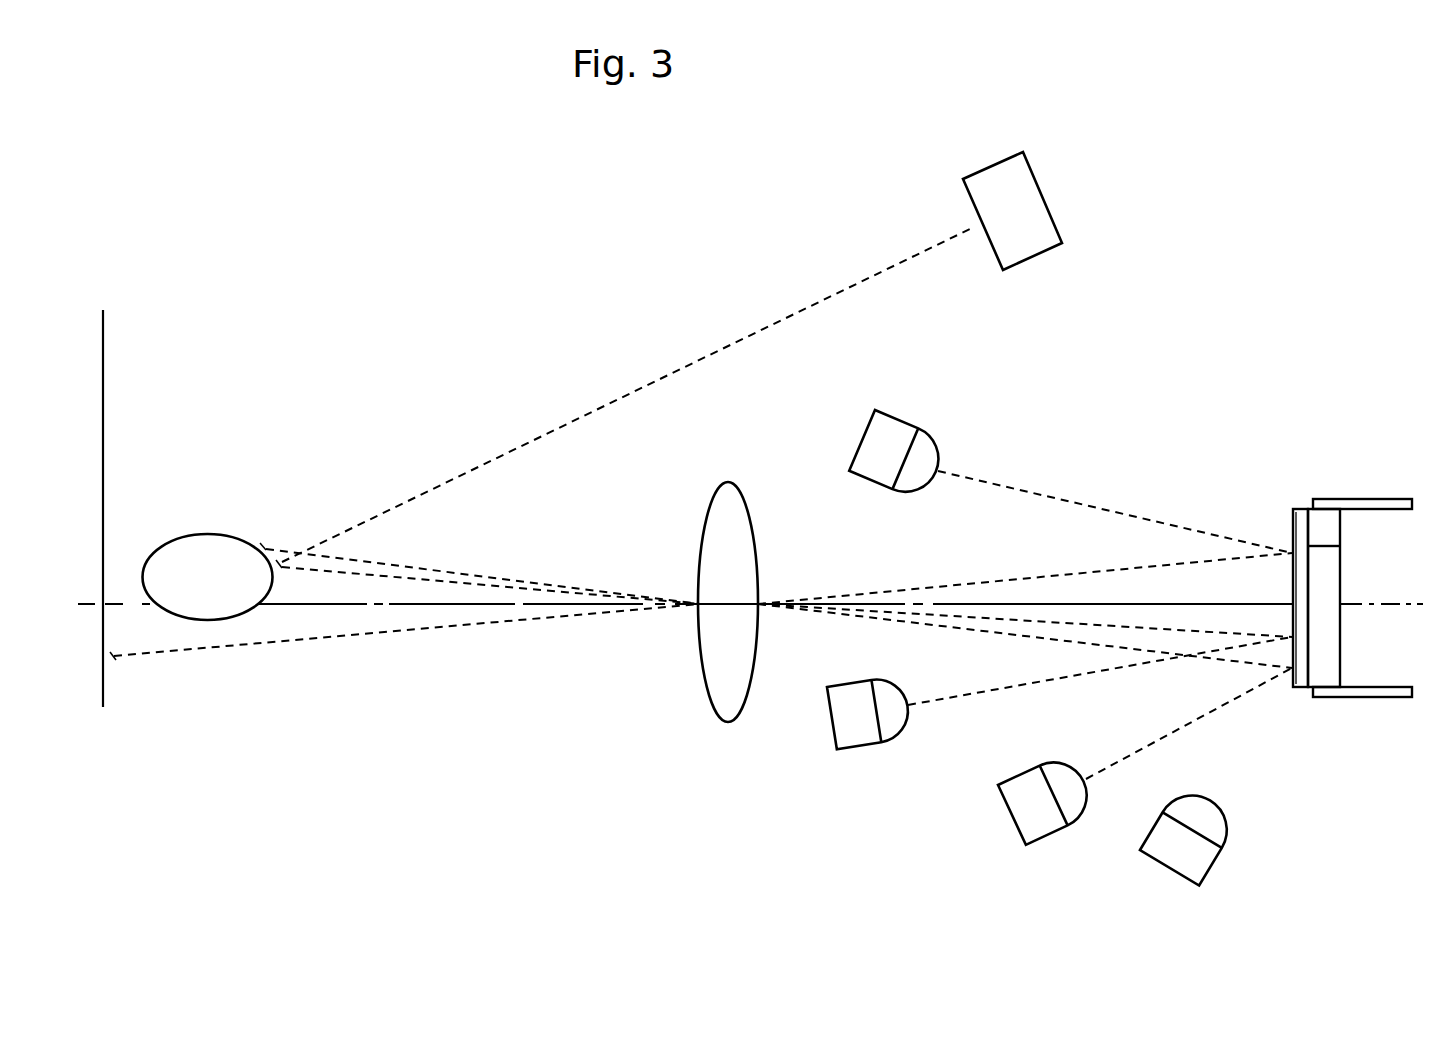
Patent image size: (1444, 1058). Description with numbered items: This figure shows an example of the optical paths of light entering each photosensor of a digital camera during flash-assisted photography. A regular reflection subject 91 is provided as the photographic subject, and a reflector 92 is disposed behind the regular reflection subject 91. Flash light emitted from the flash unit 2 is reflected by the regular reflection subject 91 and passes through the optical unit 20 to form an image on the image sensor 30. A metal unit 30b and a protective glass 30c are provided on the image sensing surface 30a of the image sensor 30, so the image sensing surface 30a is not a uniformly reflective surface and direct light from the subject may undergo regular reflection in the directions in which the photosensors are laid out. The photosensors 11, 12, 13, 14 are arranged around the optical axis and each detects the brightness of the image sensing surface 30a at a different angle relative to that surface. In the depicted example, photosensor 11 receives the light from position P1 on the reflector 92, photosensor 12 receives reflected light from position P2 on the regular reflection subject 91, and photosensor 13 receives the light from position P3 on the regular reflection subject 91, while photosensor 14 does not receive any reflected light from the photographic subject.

The flash unit 2 is at (993, 163).
The photosensor 11 is at (898, 414).
The photosensor 12 is at (857, 745).
The photosensor 13 is at (1050, 826).
The photosensor 14 is at (1170, 855).
The optical unit 20 is at (740, 488).
The image sensor 30 is at (1342, 563).
The image sensing surface 30a is at (1290, 535).
The metal unit 30b is at (1300, 525).
The protective glass 30c is at (1322, 526).
The regular reflection subject 91 is at (206, 533).
The reflector 92 is at (103, 362).
The position P1 is at (114, 658).
The position P2 is at (278, 562).
The position P3 is at (262, 543).